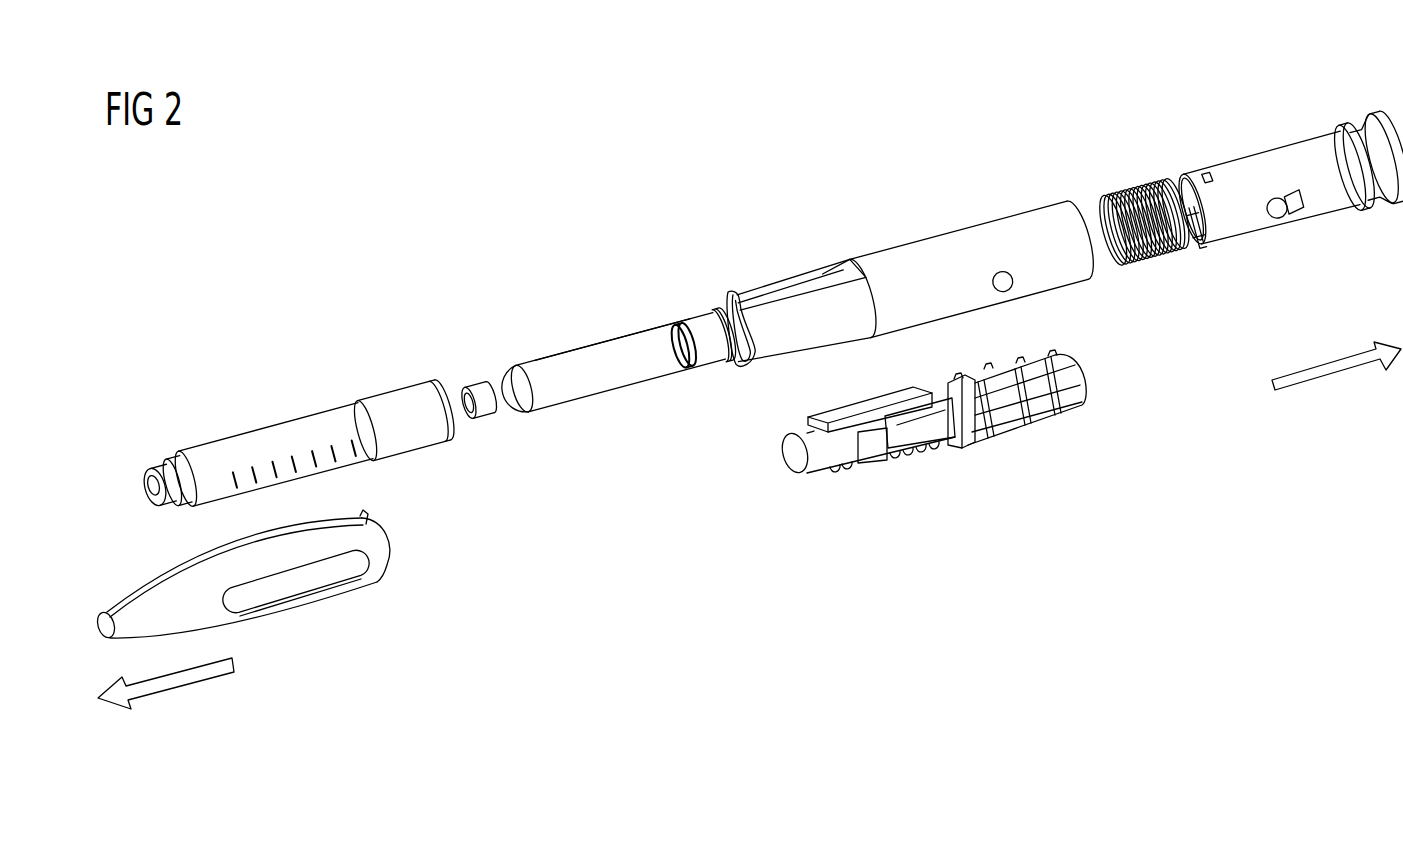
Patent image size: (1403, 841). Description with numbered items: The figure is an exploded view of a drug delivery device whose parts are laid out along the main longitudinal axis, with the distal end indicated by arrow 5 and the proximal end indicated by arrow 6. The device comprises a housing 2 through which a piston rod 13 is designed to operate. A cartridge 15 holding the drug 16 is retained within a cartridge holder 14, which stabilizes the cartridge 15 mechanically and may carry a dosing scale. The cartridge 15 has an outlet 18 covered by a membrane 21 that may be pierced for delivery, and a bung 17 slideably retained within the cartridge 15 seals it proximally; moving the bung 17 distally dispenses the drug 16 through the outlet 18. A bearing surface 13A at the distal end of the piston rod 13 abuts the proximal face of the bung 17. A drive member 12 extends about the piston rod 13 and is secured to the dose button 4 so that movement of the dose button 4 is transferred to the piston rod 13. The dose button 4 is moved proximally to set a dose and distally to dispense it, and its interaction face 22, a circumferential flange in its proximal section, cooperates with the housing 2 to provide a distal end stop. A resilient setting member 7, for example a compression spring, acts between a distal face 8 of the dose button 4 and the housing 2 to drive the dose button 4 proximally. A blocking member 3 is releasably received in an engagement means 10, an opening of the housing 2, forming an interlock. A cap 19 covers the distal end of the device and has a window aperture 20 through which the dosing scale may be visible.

The housing 2 is at (918, 226).
The blocking member 3 is at (1277, 215).
The dose button 4 is at (1319, 237).
The arrow indicating distal end 5 is at (182, 675).
The arrow indicating proximal end 6 is at (1315, 372).
The resilient setting member 7 is at (1123, 187).
The distal face of the dose button 8 is at (1197, 243).
The engagement means 10 is at (1009, 290).
The drive member 12 is at (983, 430).
The piston rod 13 is at (813, 458).
The bearing surface 13A is at (793, 453).
The cartridge holder 14 is at (275, 440).
The cartridge 15 is at (557, 408).
The drug 16 is at (585, 352).
The bung 17 is at (693, 330).
The outlet 18 is at (480, 383).
The cap 19 is at (152, 578).
The window aperture 20 is at (315, 577).
The membrane 21 is at (465, 420).
The interaction face 22 is at (1337, 130).